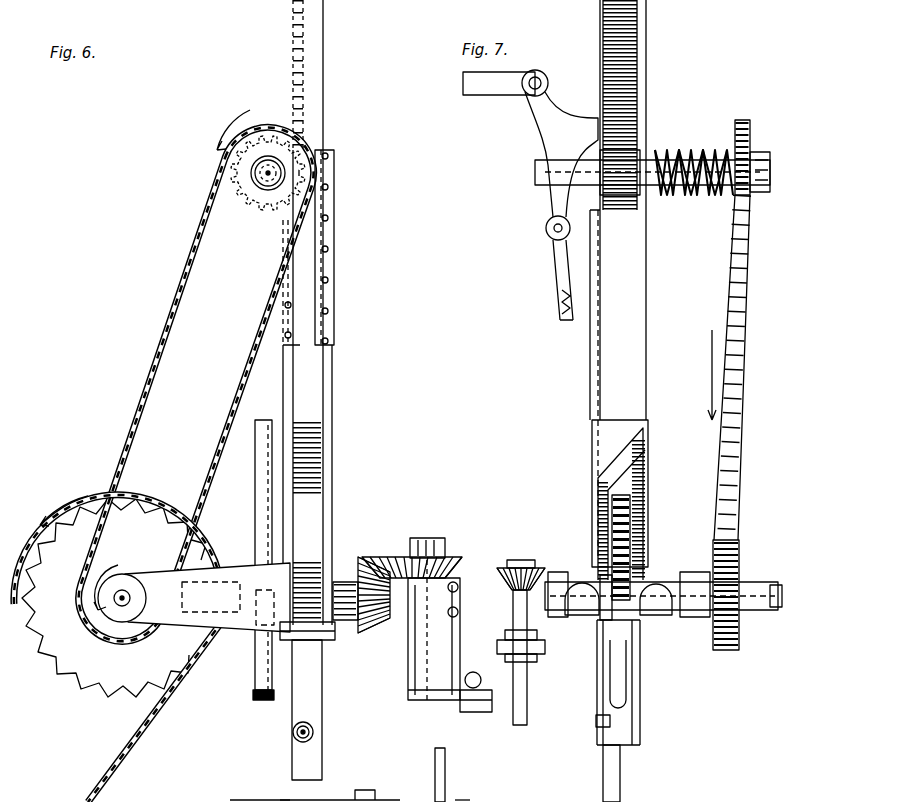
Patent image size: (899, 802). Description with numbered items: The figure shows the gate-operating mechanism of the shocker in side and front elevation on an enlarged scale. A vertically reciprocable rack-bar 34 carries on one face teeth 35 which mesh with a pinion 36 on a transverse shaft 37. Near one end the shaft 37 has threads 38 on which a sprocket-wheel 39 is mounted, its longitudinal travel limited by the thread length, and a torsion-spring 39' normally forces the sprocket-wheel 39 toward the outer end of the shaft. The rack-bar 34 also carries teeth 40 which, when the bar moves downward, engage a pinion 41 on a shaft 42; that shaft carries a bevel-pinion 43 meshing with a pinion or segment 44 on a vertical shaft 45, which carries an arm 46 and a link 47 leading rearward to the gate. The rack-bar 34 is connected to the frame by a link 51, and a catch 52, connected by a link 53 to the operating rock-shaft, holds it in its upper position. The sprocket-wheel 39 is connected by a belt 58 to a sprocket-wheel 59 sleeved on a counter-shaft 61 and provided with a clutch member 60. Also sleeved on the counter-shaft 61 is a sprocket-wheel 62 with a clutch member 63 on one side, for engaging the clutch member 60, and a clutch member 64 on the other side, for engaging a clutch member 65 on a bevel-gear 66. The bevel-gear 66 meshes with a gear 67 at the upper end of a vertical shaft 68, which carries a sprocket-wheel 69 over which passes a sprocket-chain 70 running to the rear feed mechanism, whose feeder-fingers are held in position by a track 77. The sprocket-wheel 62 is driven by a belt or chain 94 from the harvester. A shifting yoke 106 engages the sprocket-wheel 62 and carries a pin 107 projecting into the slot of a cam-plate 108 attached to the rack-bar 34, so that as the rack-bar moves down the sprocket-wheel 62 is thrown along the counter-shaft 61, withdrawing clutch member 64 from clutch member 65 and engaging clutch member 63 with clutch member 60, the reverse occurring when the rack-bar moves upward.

In FIG. 6, the rack-bar 34 is at (323, 78).
In FIG. 7, the rack-bar 34 is at (648, 42).
In FIG. 6, the teeth 35 is at (297, 76).
In FIG. 7, the teeth 35 is at (612, 30).
In FIG. 6, the pinion 36 is at (250, 140).
In FIG. 7, the pinion 36 is at (632, 158).
In FIG. 6, the transverse shaft 37 is at (266, 174).
In FIG. 7, the transverse shaft 37 is at (536, 172).
In FIG. 7, the threads 38 is at (716, 150).
In FIG. 6, the sprocket-wheel 39 is at (268, 194).
In FIG. 7, the sprocket-wheel 39 is at (754, 152).
In FIG. 7, the torsion-spring 39' is at (676, 218).
In FIG. 6, the teeth 40 is at (305, 480).
In FIG. 7, the teeth 40 is at (640, 500).
In FIG. 6, the pinion 41 is at (320, 640).
In FIG. 7, the pinion 41 is at (660, 575).
In FIG. 6, the shaft 42 is at (342, 580).
In FIG. 6, the bevel-pinion 43 is at (372, 618).
In FIG. 6, the pinion or segment 44 is at (444, 552).
In FIG. 6, the vertical shaft 45 is at (424, 540).
In FIG. 6, the arm 46 is at (446, 700).
In FIG. 6, the link 47 is at (476, 672).
In FIG. 6, the link 51 is at (308, 762).
In FIG. 7, the link 51 is at (620, 784).
In FIG. 7, the catch 52 is at (540, 110).
In FIG. 6, the link 53 is at (444, 780).
In FIG. 7, the link 53 is at (480, 78).
In FIG. 6, the belt 58 is at (160, 358).
In FIG. 7, the belt 58 is at (738, 340).
In FIG. 6, the sprocket-wheel 59 is at (132, 628).
In FIG. 7, the sprocket-wheel 59 is at (730, 650).
In FIG. 7, the clutch member 60 is at (700, 620).
In FIG. 6, the counter-shaft 61 is at (123, 605).
In FIG. 7, the counter-shaft 61 is at (782, 610).
In FIG. 6, the sprocket-wheel 62 is at (110, 676).
In FIG. 7, the sprocket-wheel 62 is at (614, 530).
In FIG. 7, the clutch member 63 is at (650, 620).
In FIG. 7, the clutch member 64 is at (582, 585).
In FIG. 7, the clutch member 65 is at (570, 620).
In FIG. 7, the bevel-gear 66 is at (555, 575).
In FIG. 6, the gear 67 is at (244, 800).
In FIG. 7, the gear 67 is at (508, 566).
In FIG. 6, the vertical shaft 68 is at (276, 786).
In FIG. 7, the vertical shaft 68 is at (527, 706).
In FIG. 7, the sprocket-wheel 69 is at (530, 655).
In FIG. 7, the sprocket-chain 70 is at (545, 650).
In FIG. 7, the track 77 is at (500, 640).
In FIG. 7, the belt or chain 94 is at (600, 722).
In FIG. 6, the shifting yoke 106 is at (242, 592).
In FIG. 6, the pin 107 is at (262, 603).
In FIG. 7, the pin 107 is at (640, 640).
In FIG. 6, the cam-plate 108 is at (260, 450).
In FIG. 7, the cam-plate 108 is at (600, 470).